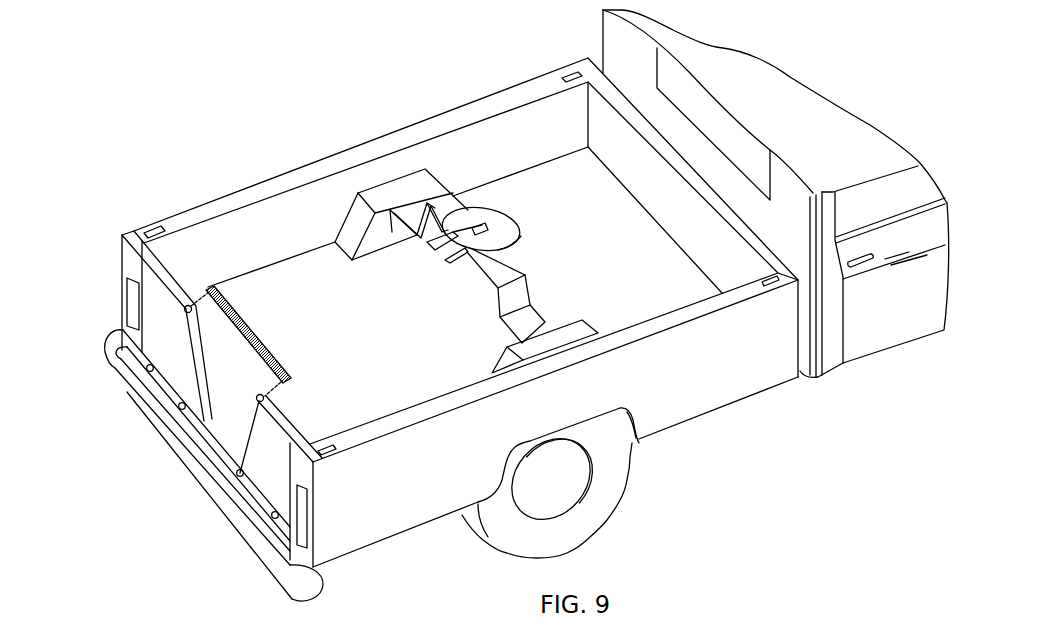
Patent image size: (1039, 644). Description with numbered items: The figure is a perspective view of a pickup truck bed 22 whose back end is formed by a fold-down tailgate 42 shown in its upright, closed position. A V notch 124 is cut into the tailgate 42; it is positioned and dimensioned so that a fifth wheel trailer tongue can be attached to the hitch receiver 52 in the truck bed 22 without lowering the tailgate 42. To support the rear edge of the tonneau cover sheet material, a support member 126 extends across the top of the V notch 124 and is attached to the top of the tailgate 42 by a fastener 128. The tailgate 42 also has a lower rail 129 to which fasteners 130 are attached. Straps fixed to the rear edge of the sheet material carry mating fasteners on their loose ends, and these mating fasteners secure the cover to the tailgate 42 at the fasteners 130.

The truck bed 22 is at (383, 507).
The tailgate 42 is at (277, 487).
The hitch receiver 52 is at (502, 260).
The V notch 124 is at (243, 468).
The support member 126 is at (267, 343).
The fastener 128 is at (184, 305).
The lower rail 129 is at (250, 490).
The fasteners 130 is at (180, 406).